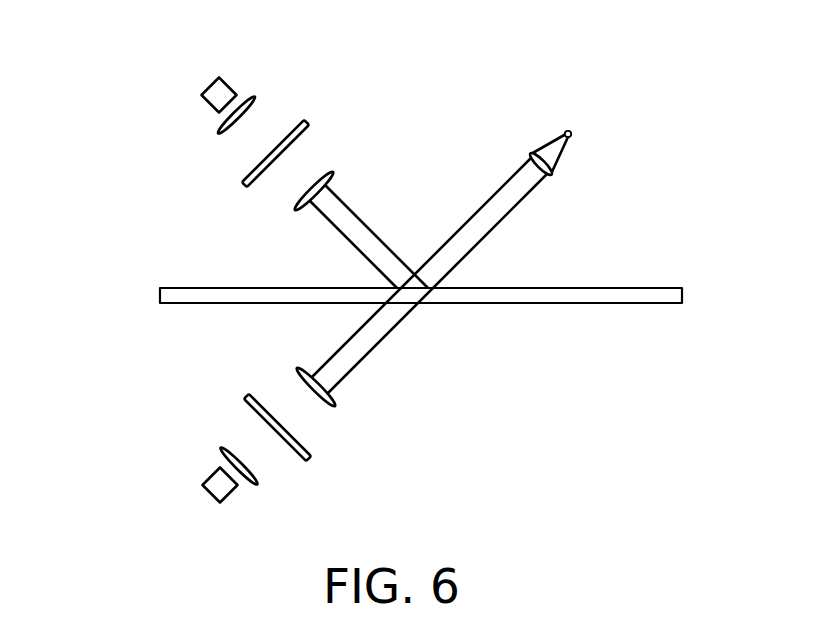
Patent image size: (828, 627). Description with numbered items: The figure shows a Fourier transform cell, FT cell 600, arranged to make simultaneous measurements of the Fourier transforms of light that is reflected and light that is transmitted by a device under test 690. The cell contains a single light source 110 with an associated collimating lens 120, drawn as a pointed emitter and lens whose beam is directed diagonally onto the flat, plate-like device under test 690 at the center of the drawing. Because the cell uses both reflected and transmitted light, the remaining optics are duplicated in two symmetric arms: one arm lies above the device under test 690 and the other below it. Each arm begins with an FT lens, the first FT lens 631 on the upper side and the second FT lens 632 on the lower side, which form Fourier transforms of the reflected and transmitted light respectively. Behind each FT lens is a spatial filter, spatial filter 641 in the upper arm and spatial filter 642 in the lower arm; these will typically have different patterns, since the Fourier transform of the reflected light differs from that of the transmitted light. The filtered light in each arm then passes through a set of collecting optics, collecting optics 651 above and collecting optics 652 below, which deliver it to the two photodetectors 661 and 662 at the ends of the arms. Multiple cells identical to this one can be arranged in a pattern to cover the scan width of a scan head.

The FT cell 600 is at (126, 76).
The light source 110 is at (590, 113).
The collimating lens 120 is at (549, 169).
The FT lens 631 is at (329, 171).
The FT lens 632 is at (331, 407).
The spatial filter 641 is at (256, 187).
The spatial filter 642 is at (305, 463).
The collecting optics 651 is at (249, 98).
The collecting optics 652 is at (251, 484).
The photodetector 661 is at (208, 85).
The photodetector 662 is at (208, 497).
The device under test 690 is at (648, 287).